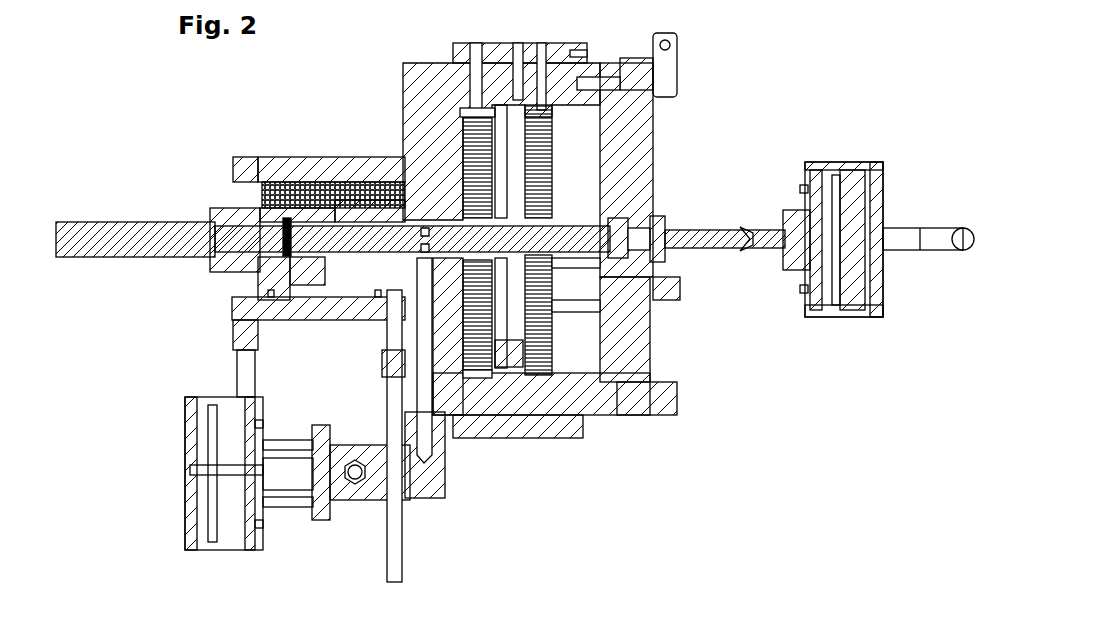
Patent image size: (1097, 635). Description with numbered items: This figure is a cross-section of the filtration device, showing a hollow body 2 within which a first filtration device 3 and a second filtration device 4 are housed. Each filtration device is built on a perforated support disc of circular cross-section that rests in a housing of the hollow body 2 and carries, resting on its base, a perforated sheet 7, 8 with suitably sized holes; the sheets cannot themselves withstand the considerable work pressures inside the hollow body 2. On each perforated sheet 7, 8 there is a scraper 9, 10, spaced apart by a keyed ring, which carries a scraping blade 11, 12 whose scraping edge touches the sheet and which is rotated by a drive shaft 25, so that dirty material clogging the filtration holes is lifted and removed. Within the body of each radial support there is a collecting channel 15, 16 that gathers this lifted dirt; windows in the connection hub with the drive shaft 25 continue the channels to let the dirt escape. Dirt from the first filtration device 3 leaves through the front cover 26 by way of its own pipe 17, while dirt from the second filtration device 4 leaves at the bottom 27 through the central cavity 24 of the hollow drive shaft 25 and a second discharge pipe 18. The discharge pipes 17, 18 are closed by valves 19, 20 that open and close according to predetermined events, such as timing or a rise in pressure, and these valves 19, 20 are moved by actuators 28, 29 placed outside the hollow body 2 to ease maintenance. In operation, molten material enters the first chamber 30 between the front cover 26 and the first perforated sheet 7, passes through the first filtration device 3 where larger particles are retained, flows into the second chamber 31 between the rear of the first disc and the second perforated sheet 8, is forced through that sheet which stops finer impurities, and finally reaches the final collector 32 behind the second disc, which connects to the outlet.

The hollow body 2 is at (502, 85).
The first filtration device 3 is at (547, 100).
The second filtration device 4 is at (470, 120).
The perforated sheet 7 is at (590, 393).
The perforated sheet 8 is at (498, 330).
The scraper 9 is at (583, 310).
The scraper 10 is at (550, 362).
The scraper 11 is at (555, 327).
The scraper 12 is at (512, 340).
The collecting channel 15 is at (552, 240).
The collecting channel 16 is at (509, 236).
The pipe 17 is at (700, 256).
The discharge pipe 18 is at (427, 440).
The valve 19 is at (660, 262).
The valve 20 is at (360, 492).
The central cavity 24 is at (455, 190).
The drive shaft 25 is at (395, 212).
The front cover 26 is at (660, 105).
The bottom 27 is at (452, 100).
The actuator 28 is at (850, 163).
The actuator 29 is at (230, 548).
The first chamber 30 is at (645, 108).
The second chamber 31 is at (585, 133).
The final collector 32 is at (460, 148).